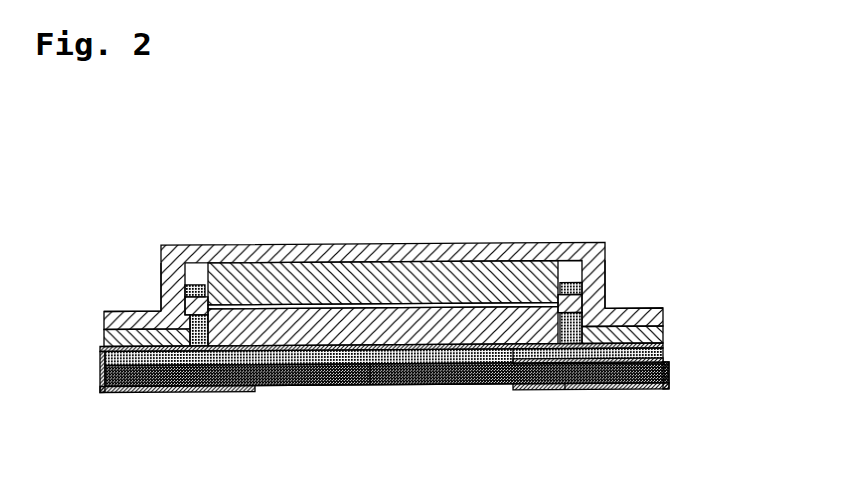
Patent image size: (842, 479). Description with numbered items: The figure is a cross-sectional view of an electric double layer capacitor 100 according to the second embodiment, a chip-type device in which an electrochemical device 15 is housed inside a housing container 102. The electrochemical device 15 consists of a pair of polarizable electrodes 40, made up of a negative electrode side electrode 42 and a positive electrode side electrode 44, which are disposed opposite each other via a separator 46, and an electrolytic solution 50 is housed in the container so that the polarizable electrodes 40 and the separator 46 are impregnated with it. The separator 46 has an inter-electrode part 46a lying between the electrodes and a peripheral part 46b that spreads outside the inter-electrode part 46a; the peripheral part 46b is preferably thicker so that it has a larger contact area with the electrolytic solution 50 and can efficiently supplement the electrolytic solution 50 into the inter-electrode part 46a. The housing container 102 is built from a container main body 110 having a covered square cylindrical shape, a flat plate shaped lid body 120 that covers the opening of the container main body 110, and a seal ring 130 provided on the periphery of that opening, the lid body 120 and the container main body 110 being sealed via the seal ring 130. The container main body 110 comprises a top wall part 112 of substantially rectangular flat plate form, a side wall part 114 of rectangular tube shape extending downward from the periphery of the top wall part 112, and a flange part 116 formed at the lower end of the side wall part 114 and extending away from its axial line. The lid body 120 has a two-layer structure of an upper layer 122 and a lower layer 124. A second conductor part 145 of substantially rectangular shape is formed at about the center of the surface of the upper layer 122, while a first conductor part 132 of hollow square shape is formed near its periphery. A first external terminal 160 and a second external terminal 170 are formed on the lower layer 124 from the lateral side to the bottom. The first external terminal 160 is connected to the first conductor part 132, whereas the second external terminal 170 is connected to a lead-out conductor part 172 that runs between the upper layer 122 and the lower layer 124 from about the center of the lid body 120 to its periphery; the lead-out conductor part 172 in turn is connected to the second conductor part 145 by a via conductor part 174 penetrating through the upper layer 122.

The electric double layer capacitor 100 is at (613, 180).
The housing container 102 is at (647, 220).
The electrochemical device 15 is at (473, 257).
The polarizable electrodes 40 is at (405, 193).
The negative electrode side electrode 42 is at (345, 277).
The positive electrode side electrode 44 is at (382, 318).
The separator 46 is at (282, 190).
The inter-electrode part 46a is at (270, 270).
The peripheral part 46b is at (203, 268).
The electrolytic solution 50 is at (205, 297).
The container main body 110 is at (698, 232).
The top wall part 112 is at (543, 243).
The side wall part 114 is at (607, 280).
The flange part 116 is at (619, 312).
The lid body 120 is at (743, 348).
The upper layer 122 is at (664, 355).
The lower layer 124 is at (670, 373).
The seal ring 130 is at (664, 334).
The first conductor part 132 is at (664, 345).
The second conductor part 145 is at (370, 356).
The first external terminal 160 is at (142, 394).
The second external terminal 170 is at (638, 391).
The lead-out conductor part 172 is at (565, 390).
The via conductor part 174 is at (499, 385).